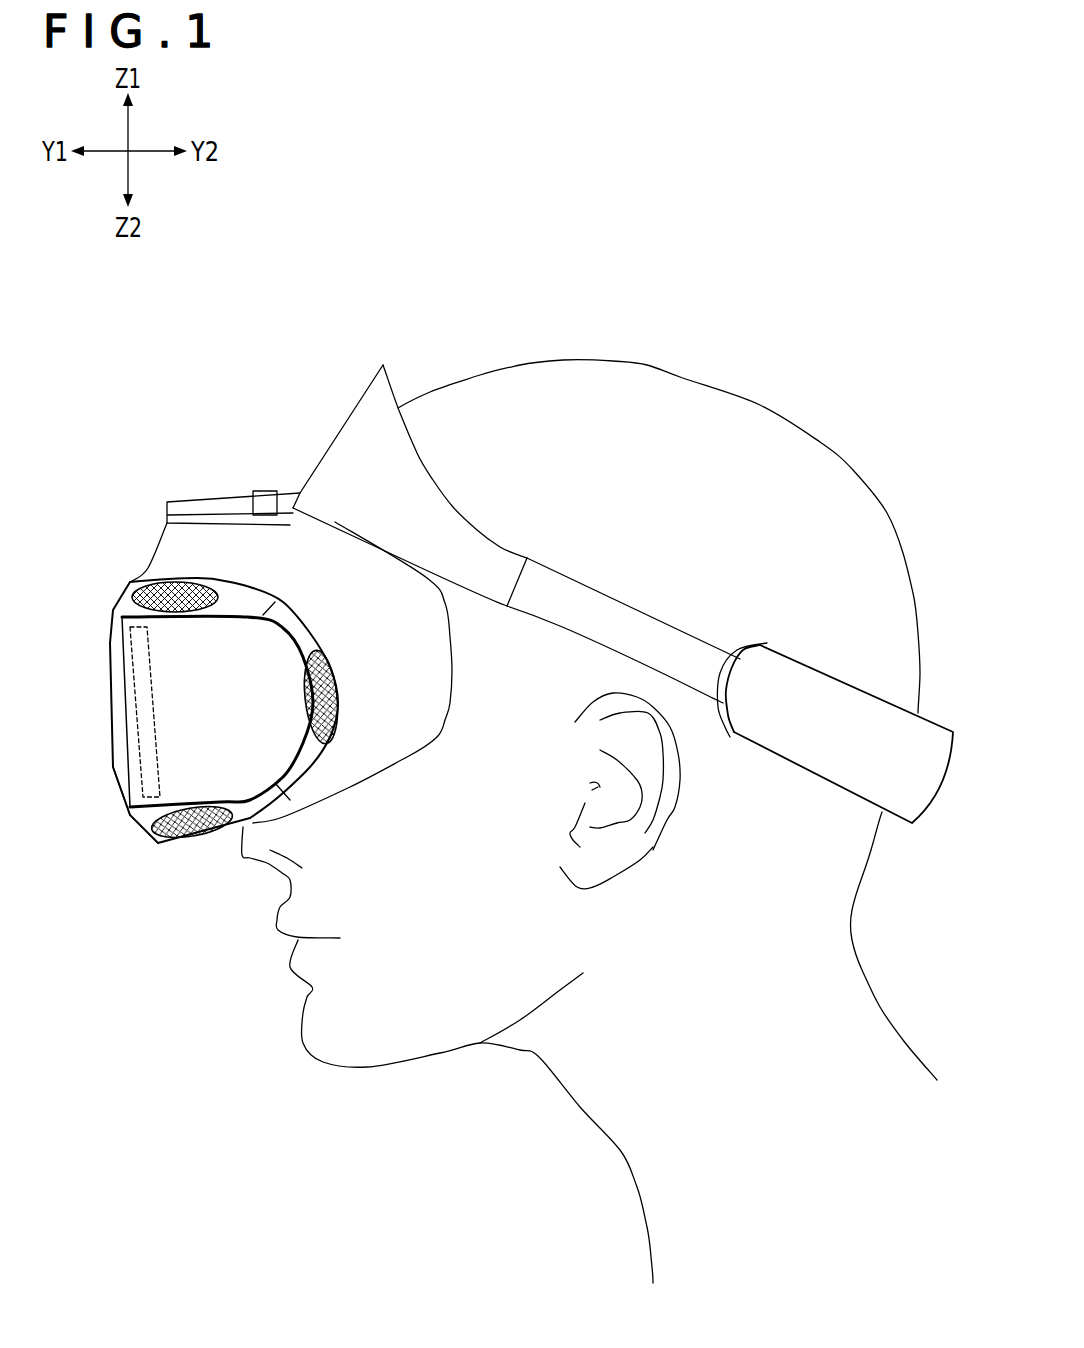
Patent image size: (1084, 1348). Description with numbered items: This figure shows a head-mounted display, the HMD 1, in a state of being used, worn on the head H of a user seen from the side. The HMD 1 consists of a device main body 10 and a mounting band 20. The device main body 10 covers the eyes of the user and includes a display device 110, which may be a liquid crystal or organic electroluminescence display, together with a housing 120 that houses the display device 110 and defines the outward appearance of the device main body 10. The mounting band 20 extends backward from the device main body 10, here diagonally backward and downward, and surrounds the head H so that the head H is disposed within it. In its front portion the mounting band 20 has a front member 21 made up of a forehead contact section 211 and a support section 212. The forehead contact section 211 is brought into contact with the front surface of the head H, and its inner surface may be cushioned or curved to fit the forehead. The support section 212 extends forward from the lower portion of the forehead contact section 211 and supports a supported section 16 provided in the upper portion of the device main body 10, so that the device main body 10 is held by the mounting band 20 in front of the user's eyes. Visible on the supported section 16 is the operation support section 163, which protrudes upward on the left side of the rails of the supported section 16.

The HMD 1 is at (172, 405).
The device main body 10 is at (99, 636).
The supported section 16 is at (167, 515).
The mounting band 20 is at (614, 590).
The front member 21 is at (343, 471).
The forehead contact section 211 is at (338, 432).
The support section 212 is at (197, 500).
The operation support section 163 is at (267, 502).
The display device 110 is at (152, 682).
The housing 120 is at (113, 782).
The head H is at (753, 403).